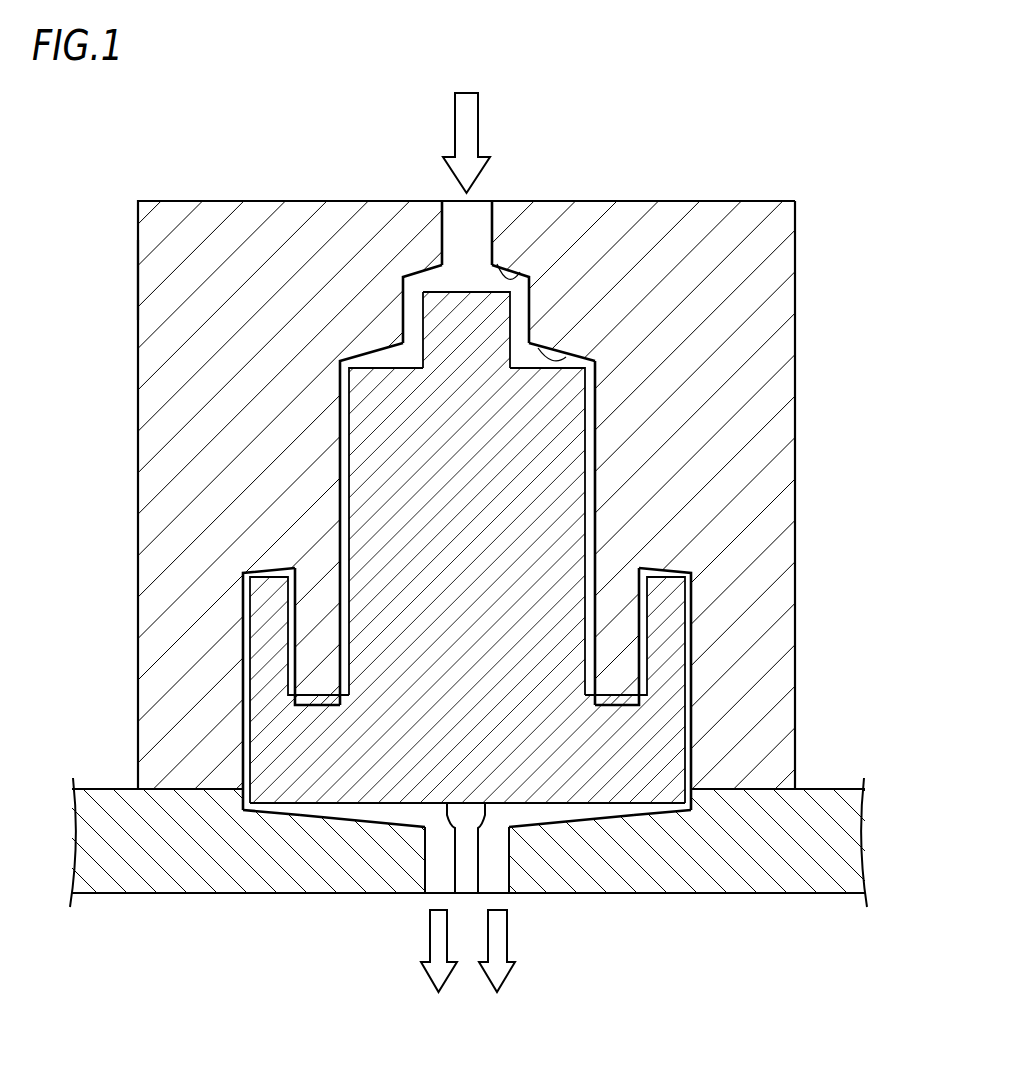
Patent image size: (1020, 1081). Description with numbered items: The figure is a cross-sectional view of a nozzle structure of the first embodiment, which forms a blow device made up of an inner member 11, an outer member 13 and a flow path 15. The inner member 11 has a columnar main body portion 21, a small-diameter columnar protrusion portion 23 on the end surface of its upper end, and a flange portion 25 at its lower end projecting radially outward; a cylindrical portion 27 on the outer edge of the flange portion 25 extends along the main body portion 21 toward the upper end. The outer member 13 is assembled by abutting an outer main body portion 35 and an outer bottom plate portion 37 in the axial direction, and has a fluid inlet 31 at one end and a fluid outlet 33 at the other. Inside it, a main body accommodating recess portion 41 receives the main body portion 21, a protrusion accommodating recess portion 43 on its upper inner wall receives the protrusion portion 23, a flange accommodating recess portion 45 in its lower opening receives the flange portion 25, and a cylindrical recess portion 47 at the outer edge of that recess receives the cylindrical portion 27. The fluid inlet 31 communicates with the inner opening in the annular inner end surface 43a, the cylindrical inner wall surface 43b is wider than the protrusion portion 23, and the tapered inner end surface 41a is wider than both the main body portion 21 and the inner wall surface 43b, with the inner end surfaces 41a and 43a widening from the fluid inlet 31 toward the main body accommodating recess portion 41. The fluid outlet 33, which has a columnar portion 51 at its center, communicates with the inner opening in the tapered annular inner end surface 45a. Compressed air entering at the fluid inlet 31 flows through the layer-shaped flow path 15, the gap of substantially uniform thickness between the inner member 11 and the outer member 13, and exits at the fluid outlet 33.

The inner member 11 is at (517, 765).
The outer member 13 is at (805, 200).
The flow path 15 is at (592, 460).
The main body portion 21 is at (368, 452).
The protrusion portion 23 is at (432, 323).
The flange portion 25 is at (278, 763).
The cylindrical portion 27 is at (265, 612).
The fluid inlet 31 is at (453, 232).
The fluid outlet 33 is at (435, 870).
The outer main body portion 35 is at (138, 283).
The outer bottom plate portion 37 is at (148, 880).
The main body accommodating recess portion 41 is at (356, 410).
The inner end surface 41a is at (596, 362).
The protrusion accommodating recess portion 43 is at (420, 283).
The inner end surface 43a is at (530, 317).
The inner wall surface 43b is at (550, 350).
The flange accommodating recess portion 45 is at (286, 809).
The inner end surface 45a is at (374, 820).
The cylindrical recess portion 47 is at (243, 572).
The columnar portion 51 is at (480, 860).